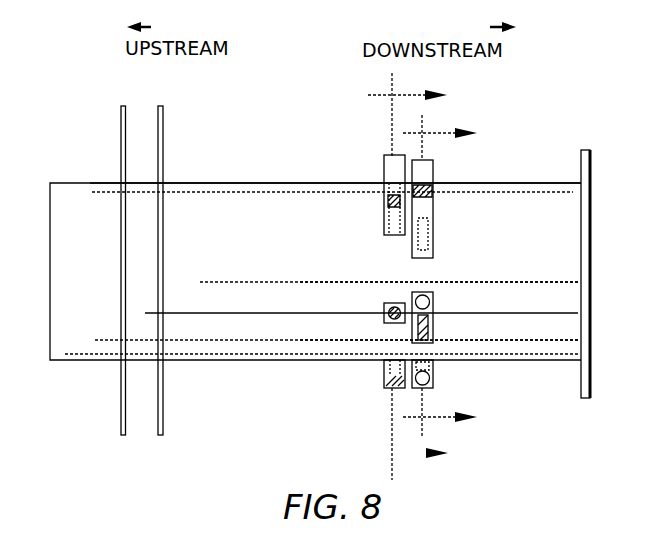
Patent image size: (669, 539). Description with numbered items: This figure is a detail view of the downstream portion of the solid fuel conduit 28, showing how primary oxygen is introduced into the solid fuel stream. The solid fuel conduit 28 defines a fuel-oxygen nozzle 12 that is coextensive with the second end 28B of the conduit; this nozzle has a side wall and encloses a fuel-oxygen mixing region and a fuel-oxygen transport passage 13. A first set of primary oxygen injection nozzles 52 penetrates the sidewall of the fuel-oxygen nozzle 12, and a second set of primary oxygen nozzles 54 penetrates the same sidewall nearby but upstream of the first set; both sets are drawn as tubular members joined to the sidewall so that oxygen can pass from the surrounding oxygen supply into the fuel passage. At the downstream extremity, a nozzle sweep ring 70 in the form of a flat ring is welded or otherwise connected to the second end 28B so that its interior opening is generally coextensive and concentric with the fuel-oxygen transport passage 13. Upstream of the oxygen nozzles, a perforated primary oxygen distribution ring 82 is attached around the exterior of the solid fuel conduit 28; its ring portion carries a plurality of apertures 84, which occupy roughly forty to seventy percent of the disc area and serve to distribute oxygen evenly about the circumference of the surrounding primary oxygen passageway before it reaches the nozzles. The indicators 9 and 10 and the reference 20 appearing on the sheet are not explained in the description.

The section line / flow direction indicator 9 is at (440, 284).
The section line / flow direction indicator 10 is at (406, 276).
The fuel-oxygen nozzle 12 is at (537, 340).
The fuel-oxygen transport passage 13 is at (483, 252).
The device 20 is at (196, 533).
The solid fuel conduit 28 is at (78, 334).
The second end of solid fuel conduit 28B is at (537, 180).
The first set of primary oxygen injection nozzles 52 is at (434, 174).
The second set of primary oxygen nozzles 54 is at (383, 170).
The nozzle sweep ring 70 is at (584, 150).
The second perforated primary oxygen distribution ring 82 is at (120, 118).
The apertures 84 is at (164, 118).